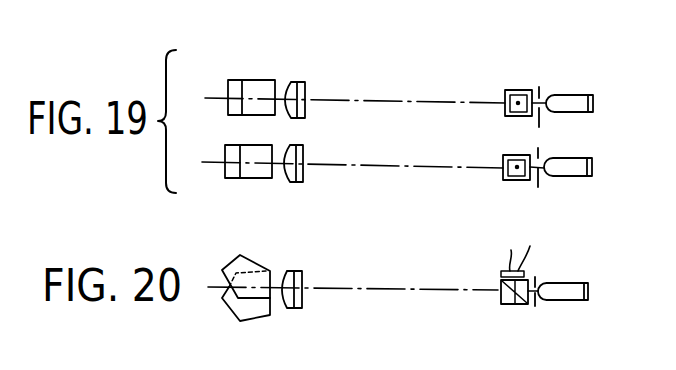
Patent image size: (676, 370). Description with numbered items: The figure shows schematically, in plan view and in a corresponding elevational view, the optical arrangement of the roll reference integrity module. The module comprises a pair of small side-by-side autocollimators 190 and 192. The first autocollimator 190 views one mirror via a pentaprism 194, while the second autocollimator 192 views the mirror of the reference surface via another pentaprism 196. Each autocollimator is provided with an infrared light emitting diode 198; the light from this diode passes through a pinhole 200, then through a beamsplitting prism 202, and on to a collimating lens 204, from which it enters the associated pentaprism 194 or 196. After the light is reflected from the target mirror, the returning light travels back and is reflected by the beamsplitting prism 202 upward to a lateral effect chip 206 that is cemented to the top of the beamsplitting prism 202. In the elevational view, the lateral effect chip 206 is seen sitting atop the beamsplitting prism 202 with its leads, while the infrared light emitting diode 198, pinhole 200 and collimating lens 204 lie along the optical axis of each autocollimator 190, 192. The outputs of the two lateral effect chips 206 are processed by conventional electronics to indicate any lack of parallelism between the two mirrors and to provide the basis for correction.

In FIG. 19, the autocollimator 190 is at (461, 101).
In FIG. 19, the autocollimator 192 is at (395, 166).
In FIG. 19, the pentaprism 194 is at (258, 82).
In FIG. 19, the pentaprism 196 is at (258, 171).
In FIG. 19, the infrared light emitting diode 198 is at (585, 94).
In FIG. 20, the infrared light emitting diode 198 is at (591, 291).
In FIG. 19, the pinhole 200 is at (541, 88).
In FIG. 20, the pinhole 200 is at (536, 308).
In FIG. 19, the beamsplitting prism 202 is at (508, 113).
In FIG. 20, the beamsplitting prism 202 is at (512, 303).
In FIG. 19, the collimating lens 204 is at (291, 82).
In FIG. 19, the lateral effect chip 206 is at (519, 108).
In FIG. 20, the lateral effect chip 206 is at (522, 269).